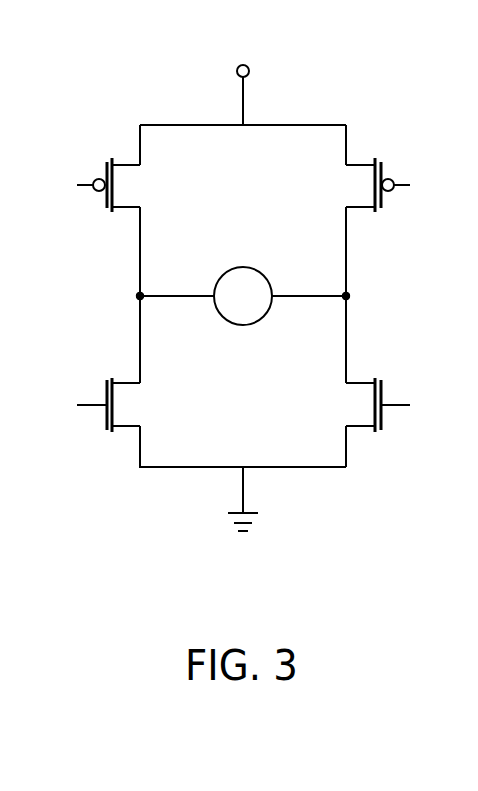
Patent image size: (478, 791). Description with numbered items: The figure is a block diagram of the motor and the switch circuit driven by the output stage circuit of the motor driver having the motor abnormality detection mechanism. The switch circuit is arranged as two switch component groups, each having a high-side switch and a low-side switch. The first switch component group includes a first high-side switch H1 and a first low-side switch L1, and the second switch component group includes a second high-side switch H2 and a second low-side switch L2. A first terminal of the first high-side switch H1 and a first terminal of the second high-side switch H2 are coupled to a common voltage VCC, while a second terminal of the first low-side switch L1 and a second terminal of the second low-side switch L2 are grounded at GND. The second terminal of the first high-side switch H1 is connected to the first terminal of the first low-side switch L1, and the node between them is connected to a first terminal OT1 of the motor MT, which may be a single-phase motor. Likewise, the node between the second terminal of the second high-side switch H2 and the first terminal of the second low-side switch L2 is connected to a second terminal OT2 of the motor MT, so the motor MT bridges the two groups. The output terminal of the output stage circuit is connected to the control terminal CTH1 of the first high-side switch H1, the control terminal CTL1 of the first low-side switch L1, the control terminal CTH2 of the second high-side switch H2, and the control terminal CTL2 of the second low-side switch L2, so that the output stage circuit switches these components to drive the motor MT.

The first high-side switch H1 is at (108, 157).
The second high-side switch H2 is at (380, 155).
The first low-side switch L1 is at (109, 435).
The second low-side switch L2 is at (378, 435).
The motor MT is at (247, 268).
The control terminal of the first high-side switch CTH1 is at (63, 164).
The control terminal of the second high-side switch CTH2 is at (430, 164).
The control terminal of the first low-side switch CTL1 is at (67, 384).
The control terminal of the second low-side switch CTL2 is at (423, 384).
The first terminal of the motor OT1 is at (95, 296).
The second terminal of the motor OT2 is at (378, 296).
The common voltage VCC is at (242, 80).
The ground GND is at (243, 499).